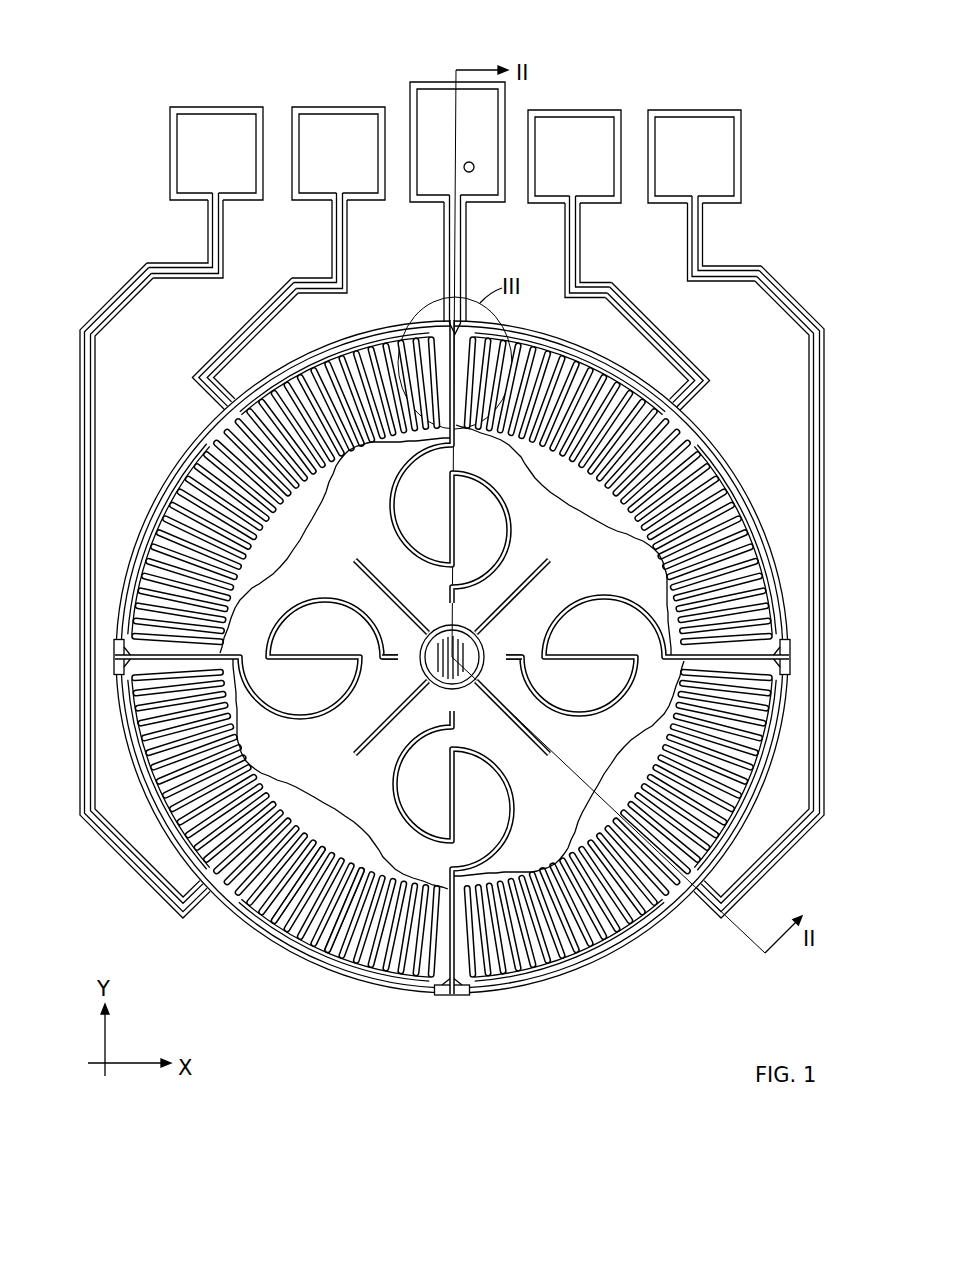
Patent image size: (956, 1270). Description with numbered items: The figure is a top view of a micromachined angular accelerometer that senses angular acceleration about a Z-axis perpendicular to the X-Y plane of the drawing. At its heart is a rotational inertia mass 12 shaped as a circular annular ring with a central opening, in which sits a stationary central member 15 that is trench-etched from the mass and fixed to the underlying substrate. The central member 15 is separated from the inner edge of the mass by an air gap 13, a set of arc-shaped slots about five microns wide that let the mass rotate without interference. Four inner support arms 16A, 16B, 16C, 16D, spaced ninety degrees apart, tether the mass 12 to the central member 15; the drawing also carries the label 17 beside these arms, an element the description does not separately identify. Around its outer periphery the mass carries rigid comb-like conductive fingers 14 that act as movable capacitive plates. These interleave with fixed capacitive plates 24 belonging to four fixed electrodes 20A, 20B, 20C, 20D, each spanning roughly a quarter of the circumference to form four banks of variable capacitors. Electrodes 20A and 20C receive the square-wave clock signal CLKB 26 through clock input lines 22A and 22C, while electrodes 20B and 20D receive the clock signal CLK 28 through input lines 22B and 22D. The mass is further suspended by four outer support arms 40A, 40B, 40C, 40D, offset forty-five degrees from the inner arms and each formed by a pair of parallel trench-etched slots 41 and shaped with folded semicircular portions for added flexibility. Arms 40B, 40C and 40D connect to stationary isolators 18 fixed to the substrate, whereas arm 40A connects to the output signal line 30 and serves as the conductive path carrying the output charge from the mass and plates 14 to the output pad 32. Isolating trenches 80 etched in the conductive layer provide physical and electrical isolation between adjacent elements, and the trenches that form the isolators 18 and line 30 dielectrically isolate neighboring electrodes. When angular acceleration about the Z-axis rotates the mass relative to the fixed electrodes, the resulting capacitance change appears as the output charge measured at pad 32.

The rotational inertia mass 12 is at (548, 501).
The air gap 13 is at (495, 655).
The comb-like conductive fingers 14 is at (317, 853).
The stationary central member 15 is at (453, 633).
The inner support arm 16A is at (352, 560).
The inner support arm 16B is at (550, 565).
The inner support arm 16C is at (551, 757).
The inner support arm 16D is at (351, 754).
The spoke beam 17 is at (460, 668).
The isolator 18 is at (443, 997).
The first fixed electrode 20A is at (190, 473).
The second fixed electrode 20B is at (713, 470).
The third fixed electrode 20C is at (662, 895).
The fourth fixed electrode 20D is at (253, 907).
The clock input line 22A is at (247, 335).
The clock input line 22B is at (663, 335).
The clock input line 22C is at (755, 884).
The clock input line 22D is at (120, 850).
The fixed capacitive plates 24 is at (352, 848).
The clock signal CLKB 26 is at (323, 122).
The clock signal CLK 28 is at (200, 122).
The output signal line 30 is at (453, 265).
The output pad 32 is at (430, 95).
The outer support arm 40A is at (400, 467).
The outer support arm 40B is at (600, 597).
The outer support arm 40C is at (445, 877).
The outer support arm 40D is at (230, 650).
The trench-etched slots 41 is at (425, 461).
The isolating trenches 80 is at (437, 83).